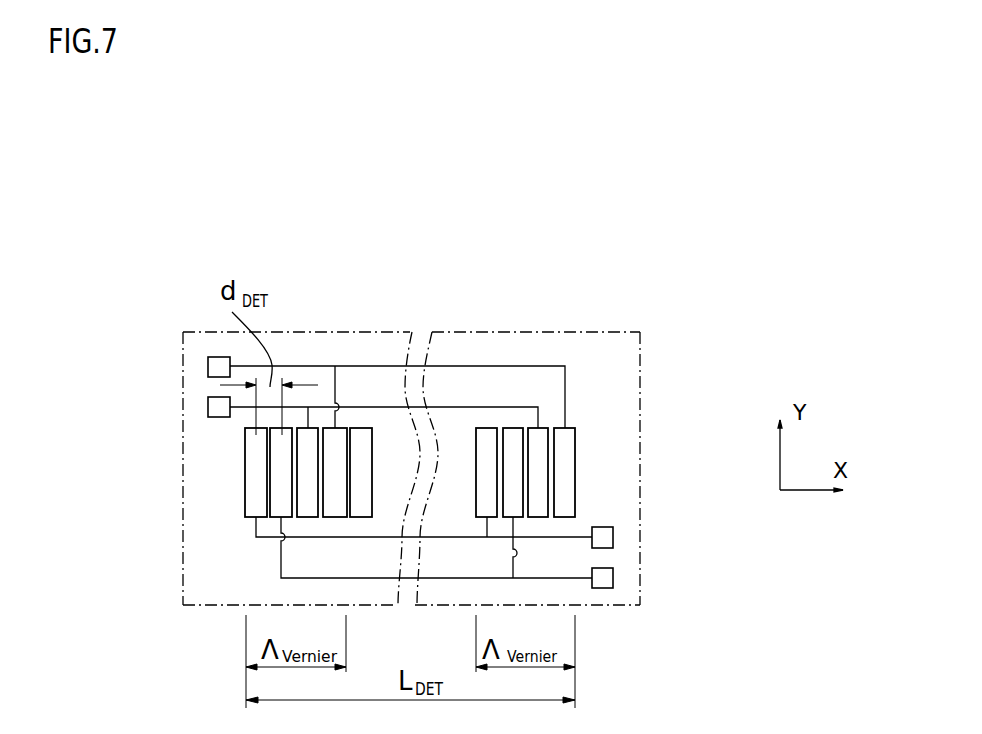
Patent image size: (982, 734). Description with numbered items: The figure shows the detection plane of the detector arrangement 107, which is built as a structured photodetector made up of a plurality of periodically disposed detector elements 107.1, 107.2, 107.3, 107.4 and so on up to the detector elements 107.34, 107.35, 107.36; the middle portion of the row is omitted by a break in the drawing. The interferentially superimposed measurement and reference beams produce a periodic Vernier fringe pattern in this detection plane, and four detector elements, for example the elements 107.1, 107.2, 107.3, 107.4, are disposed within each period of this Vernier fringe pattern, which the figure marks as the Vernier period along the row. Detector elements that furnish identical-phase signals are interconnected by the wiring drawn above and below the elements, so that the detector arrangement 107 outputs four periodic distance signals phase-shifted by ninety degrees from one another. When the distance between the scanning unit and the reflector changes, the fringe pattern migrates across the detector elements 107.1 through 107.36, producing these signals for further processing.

The detector arrangement 107 is at (182, 618).
The detector element 107.1 is at (255, 506).
The detector element 107.2 is at (283, 493).
The detector element 107.3 is at (308, 472).
The detector element 107.4 is at (333, 450).
The detector element 107.34 is at (512, 438).
The detector element 107.35 is at (540, 440).
The detector element 107.36 is at (563, 457).